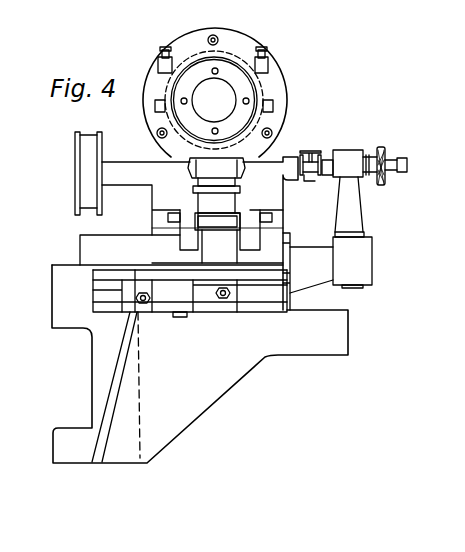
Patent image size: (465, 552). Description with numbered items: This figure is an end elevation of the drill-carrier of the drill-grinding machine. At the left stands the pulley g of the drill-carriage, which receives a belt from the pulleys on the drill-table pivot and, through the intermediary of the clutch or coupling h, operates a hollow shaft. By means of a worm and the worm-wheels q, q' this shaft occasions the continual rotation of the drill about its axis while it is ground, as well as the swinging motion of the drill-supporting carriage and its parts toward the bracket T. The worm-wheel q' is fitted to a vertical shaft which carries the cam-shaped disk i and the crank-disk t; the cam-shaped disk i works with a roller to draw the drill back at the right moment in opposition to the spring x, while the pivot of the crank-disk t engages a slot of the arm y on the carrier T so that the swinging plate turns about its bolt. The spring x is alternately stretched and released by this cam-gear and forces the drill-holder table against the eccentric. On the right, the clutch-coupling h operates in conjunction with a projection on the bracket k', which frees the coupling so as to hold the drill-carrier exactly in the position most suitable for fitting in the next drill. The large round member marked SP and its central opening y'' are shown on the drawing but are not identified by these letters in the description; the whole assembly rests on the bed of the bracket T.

The spindle faceplate / chuck SP is at (266, 74).
The worm-wheel q is at (236, 100).
The central opening y'' is at (214, 100).
The worm-wheel q' is at (204, 180).
The pulley g is at (84, 192).
The cam-shaped disk i is at (233, 218).
The clutch or coupling h is at (313, 184).
The bracket k' is at (340, 235).
The crank-disk t is at (273, 273).
The spring x is at (168, 303).
The arm y is at (230, 312).
The bracket or carrier T is at (200, 364).